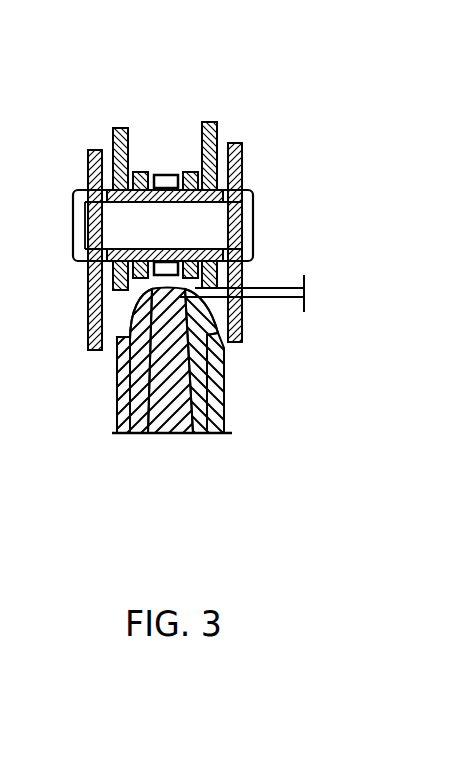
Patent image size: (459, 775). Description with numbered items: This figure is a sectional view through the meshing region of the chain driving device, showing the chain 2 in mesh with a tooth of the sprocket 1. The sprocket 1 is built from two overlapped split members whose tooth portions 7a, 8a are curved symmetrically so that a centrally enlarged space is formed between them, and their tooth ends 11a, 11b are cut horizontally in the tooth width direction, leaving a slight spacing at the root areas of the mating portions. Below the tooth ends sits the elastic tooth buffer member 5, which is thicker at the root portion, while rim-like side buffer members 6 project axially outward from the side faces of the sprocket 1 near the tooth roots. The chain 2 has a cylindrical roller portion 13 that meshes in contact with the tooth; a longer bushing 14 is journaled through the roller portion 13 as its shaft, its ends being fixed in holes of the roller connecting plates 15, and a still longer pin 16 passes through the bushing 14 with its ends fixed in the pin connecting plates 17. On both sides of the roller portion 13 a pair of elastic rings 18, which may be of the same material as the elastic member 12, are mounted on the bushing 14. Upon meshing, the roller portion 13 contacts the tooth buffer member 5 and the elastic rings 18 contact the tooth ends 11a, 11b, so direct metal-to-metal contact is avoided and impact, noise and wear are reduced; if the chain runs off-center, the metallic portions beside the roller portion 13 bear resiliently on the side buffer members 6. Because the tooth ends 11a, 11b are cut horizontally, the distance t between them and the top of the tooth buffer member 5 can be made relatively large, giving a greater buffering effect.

The sprocket 1 is at (247, 425).
The chain 2 is at (265, 95).
The tooth buffer member 5 is at (88, 330).
The side buffer member 6 is at (115, 405).
The tooth portion 7a is at (126, 437).
The tooth portion 8a is at (210, 434).
The tooth end 11a is at (132, 318).
The tooth end 11b is at (222, 340).
The elastic member 12 is at (170, 434).
The roller portion 13 is at (163, 174).
The bushing 14 is at (232, 190).
The roller connecting plate 15 is at (122, 126).
The pin 16 is at (228, 223).
The pin connecting plate 17 is at (88, 151).
The elastic ring 18 is at (139, 171).
The distance t is at (249, 285).